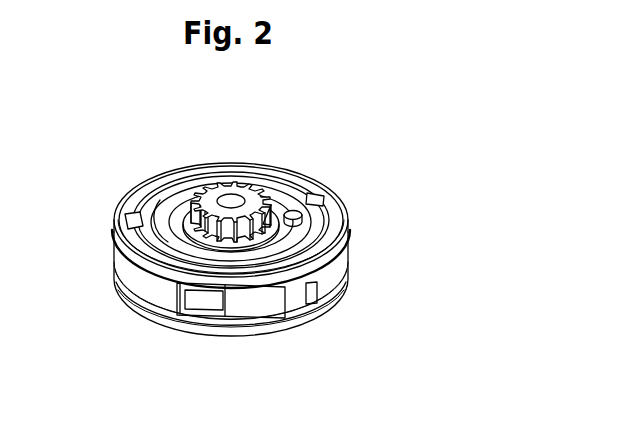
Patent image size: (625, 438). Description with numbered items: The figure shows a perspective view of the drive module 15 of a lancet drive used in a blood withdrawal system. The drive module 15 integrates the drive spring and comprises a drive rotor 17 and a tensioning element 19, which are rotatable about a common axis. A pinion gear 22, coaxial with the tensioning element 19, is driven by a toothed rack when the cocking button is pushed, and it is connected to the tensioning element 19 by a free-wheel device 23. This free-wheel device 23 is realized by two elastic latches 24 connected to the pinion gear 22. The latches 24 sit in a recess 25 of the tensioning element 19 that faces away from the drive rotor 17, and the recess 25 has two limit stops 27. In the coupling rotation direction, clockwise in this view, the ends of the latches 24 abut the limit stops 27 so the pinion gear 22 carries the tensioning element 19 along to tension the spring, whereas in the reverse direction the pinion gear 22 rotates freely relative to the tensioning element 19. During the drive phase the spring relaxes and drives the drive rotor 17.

The drive module 15 is at (113, 267).
The drive rotor 17 is at (330, 305).
The tensioning element 19 is at (117, 237).
The pinion gear 22 is at (245, 190).
The free-wheel device 23 is at (211, 164).
The elastic latches 24 is at (165, 195).
The recess 25 is at (292, 214).
The limit stops 27 is at (140, 222).